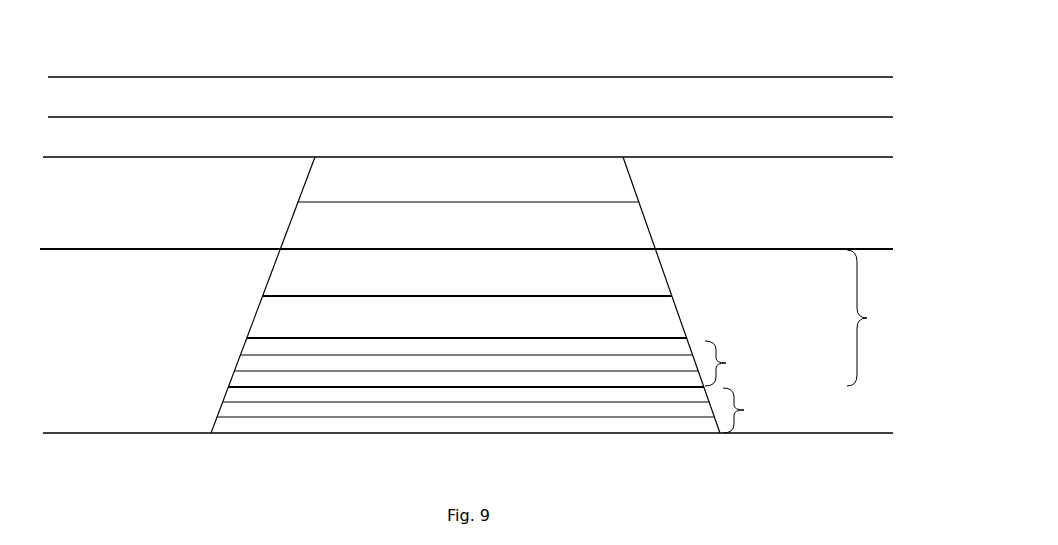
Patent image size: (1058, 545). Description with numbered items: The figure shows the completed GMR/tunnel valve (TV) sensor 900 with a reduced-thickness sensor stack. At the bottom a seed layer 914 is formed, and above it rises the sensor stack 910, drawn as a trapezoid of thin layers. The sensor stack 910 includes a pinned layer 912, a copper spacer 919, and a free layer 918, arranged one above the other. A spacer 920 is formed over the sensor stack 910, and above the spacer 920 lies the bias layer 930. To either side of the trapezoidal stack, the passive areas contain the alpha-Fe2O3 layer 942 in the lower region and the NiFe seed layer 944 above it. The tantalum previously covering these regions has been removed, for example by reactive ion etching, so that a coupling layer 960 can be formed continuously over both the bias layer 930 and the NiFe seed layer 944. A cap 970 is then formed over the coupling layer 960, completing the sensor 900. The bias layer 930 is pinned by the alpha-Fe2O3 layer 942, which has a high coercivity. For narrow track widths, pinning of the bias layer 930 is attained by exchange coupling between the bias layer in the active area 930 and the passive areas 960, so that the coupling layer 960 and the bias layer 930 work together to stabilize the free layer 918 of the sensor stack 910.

The GMR/tunnel valve (TV) sensor 900 is at (157, 65).
The cap 970 is at (440, 97).
The coupling layer 960 is at (410, 138).
The bias layer 930 is at (404, 183).
The spacer 920 is at (430, 228).
The free layer 918 is at (440, 273).
The copper spacer 919 is at (450, 318).
The pinned layer 912 is at (768, 349).
The seed layer 914 is at (858, 408).
The sensor stack 910 is at (868, 319).
The NiFe seed layer 944 is at (93, 232).
The alpha-Fe2O3 layer 942 is at (146, 362).